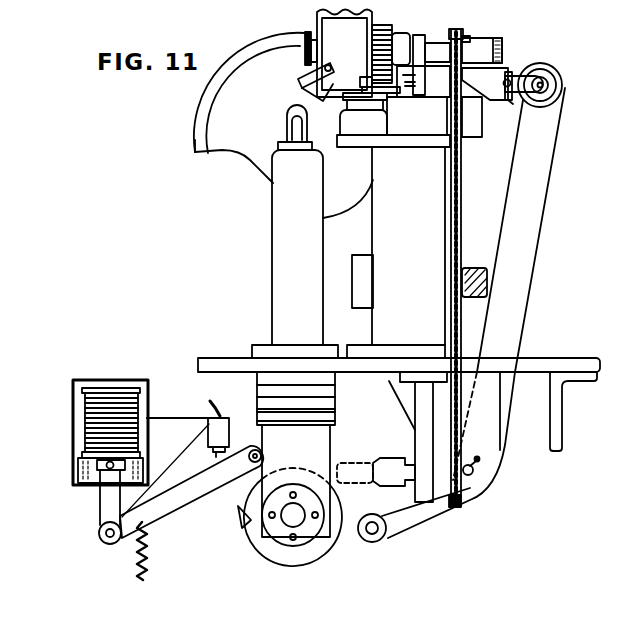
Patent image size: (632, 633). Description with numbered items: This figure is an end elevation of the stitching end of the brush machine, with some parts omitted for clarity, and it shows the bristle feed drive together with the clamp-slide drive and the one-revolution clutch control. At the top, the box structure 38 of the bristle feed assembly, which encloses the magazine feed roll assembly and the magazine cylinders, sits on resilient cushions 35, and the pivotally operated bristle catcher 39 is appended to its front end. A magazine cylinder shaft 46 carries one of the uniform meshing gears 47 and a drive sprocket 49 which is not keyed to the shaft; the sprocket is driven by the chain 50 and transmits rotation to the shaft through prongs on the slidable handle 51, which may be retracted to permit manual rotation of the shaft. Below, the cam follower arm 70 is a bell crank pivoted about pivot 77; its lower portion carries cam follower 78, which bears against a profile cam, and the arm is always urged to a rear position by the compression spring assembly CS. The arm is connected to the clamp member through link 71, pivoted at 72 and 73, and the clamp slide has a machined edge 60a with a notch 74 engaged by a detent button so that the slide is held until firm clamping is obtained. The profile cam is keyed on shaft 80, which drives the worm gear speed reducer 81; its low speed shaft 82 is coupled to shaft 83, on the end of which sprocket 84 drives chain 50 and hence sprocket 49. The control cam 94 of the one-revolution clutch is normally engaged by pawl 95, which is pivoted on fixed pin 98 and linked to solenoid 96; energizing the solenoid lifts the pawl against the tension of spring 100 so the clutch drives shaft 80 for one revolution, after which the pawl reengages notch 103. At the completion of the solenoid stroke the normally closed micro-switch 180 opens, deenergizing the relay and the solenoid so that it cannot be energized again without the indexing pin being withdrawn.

The resilient cushions 35 is at (383, 118).
The box structure 38 is at (357, 48).
The bristle catcher 39 is at (298, 84).
The shaft 46 is at (451, 35).
The meshing gear 47 is at (393, 30).
The drive sprocket 49 is at (463, 38).
The chain 50 is at (462, 207).
The slidable handle 51 is at (490, 42).
The edge of clamp slide 60a is at (513, 102).
The cam follower arm 70 is at (538, 282).
The link 71 is at (538, 64).
The pivot 72 is at (560, 78).
The pivot 73 is at (509, 72).
The notch 74 is at (503, 100).
The pivot 77 is at (474, 471).
The cam follower 78 is at (386, 535).
The shaft 80 is at (298, 520).
The worm gear speed reducer 81 is at (322, 443).
The low speed shaft 82 is at (337, 466).
The shaft 83 is at (387, 466).
The sprocket 84 is at (468, 505).
The control cam 94 is at (284, 562).
The pawl 95 is at (240, 496).
The solenoid 96 is at (85, 433).
The fixed pin 98 is at (262, 452).
The spring 100 is at (151, 580).
The notch 103 is at (243, 500).
The micro-switch 180 is at (211, 412).
The compression spring assembly CS is at (463, 267).